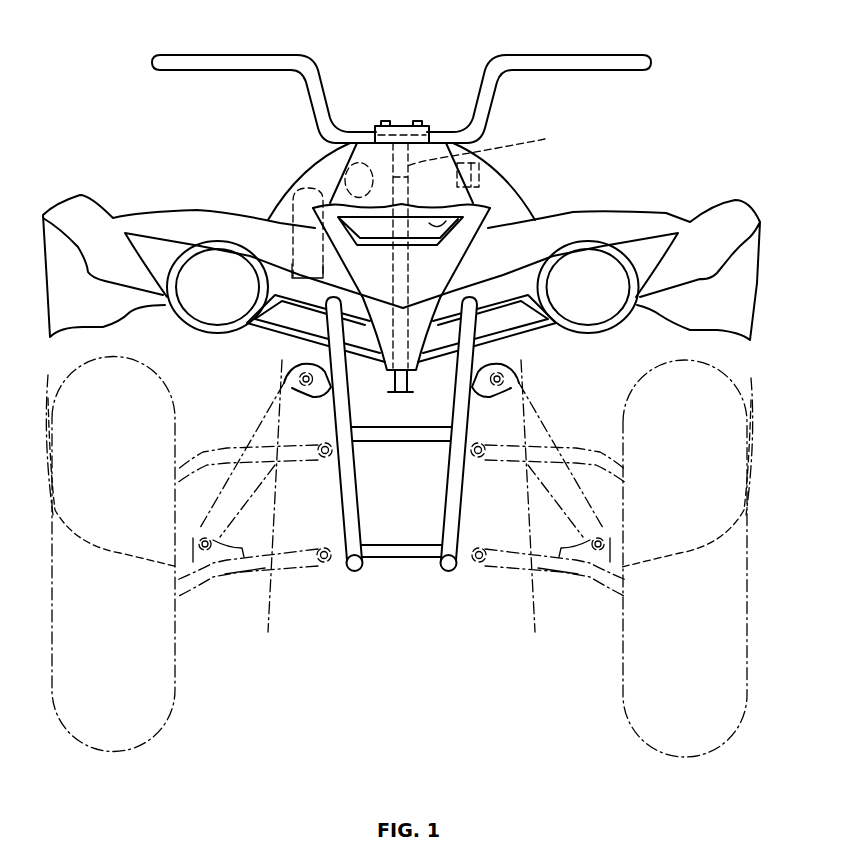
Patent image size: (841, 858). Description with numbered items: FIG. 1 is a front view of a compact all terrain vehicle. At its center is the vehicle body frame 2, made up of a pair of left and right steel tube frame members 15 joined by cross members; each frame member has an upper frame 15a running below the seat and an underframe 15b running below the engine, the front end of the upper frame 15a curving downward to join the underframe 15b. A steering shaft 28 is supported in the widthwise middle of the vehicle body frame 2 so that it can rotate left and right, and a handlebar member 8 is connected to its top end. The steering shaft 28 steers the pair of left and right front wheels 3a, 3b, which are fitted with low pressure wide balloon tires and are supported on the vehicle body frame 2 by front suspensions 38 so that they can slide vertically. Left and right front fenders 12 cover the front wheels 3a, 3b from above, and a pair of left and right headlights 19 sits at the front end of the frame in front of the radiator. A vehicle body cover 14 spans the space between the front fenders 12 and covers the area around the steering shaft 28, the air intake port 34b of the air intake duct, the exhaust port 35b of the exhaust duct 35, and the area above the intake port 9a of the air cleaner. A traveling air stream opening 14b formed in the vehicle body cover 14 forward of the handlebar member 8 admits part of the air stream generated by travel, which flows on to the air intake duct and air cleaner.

The vehicle body frame 2 is at (480, 409).
The front wheel 3a is at (622, 667).
The front wheel 3b is at (176, 660).
The handlebar member 8 is at (560, 57).
The intake port 9a is at (545, 139).
The front fender 12 is at (112, 219).
The vehicle body cover 14 is at (523, 200).
The traveling air stream opening 14b is at (446, 221).
The frame member 15 is at (333, 490).
The upper frame 15a is at (283, 338).
The underframe 15b is at (347, 570).
The headlight 19 is at (203, 326).
The steering shaft 28 is at (479, 172).
The air intake port 34b is at (344, 177).
The exhaust duct 35 is at (286, 235).
The exhaust port 35b is at (303, 279).
The front suspension 38 is at (251, 588).